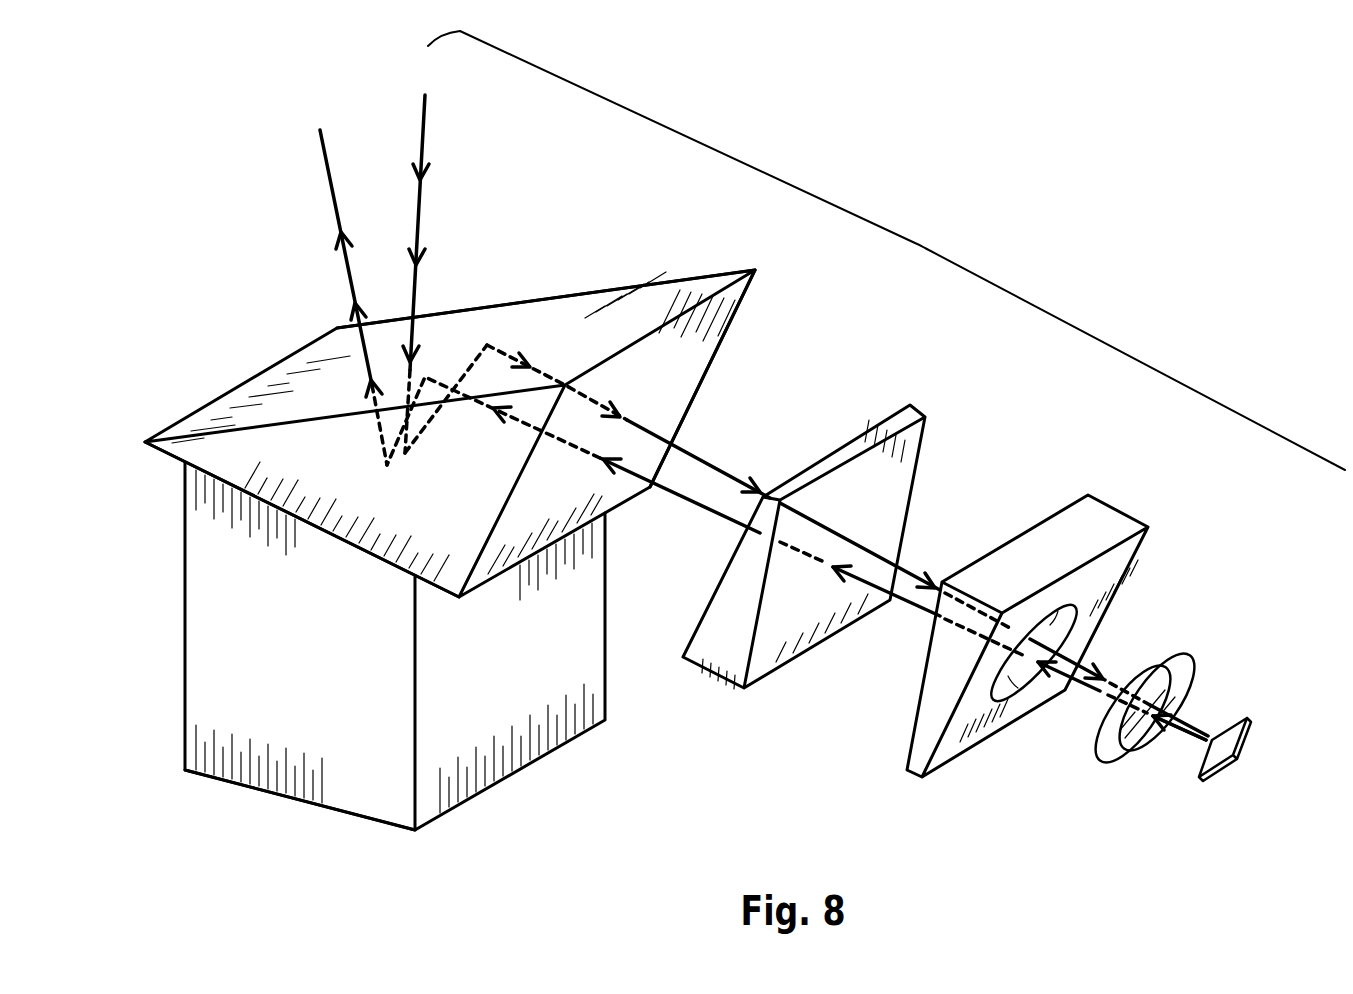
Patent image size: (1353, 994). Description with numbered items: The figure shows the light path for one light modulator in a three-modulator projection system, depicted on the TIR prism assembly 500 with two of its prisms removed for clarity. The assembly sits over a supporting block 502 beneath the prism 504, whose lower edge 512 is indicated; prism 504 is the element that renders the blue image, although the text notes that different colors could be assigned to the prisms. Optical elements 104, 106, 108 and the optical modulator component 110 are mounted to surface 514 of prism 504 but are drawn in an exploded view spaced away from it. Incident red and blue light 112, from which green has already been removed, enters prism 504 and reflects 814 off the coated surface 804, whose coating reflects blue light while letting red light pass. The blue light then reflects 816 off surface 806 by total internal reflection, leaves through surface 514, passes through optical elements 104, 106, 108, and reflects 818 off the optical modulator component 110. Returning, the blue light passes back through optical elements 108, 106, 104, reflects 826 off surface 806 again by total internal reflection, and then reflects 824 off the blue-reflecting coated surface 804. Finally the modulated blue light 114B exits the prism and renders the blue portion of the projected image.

The TIR prism assembly 500 is at (920, 243).
The prism 502 is at (395, 646).
The prism 504 is at (450, 433).
The bottom edge of support block 512 is at (360, 813).
The surface 514 is at (678, 388).
The coated surface 804 is at (172, 455).
The surface 806 is at (625, 305).
The incident red and blue light 112 is at (424, 127).
The blue light 114B is at (328, 186).
The reflection 814 is at (404, 455).
The reflection 816 is at (487, 345).
The reflection 824 is at (387, 462).
The reflection 826 is at (426, 372).
The optical element 104 is at (772, 638).
The optical element 106 is at (980, 710).
The optical element 108 is at (1150, 667).
The optical modulator component 110 is at (1230, 752).
The reflection 818 is at (1208, 742).